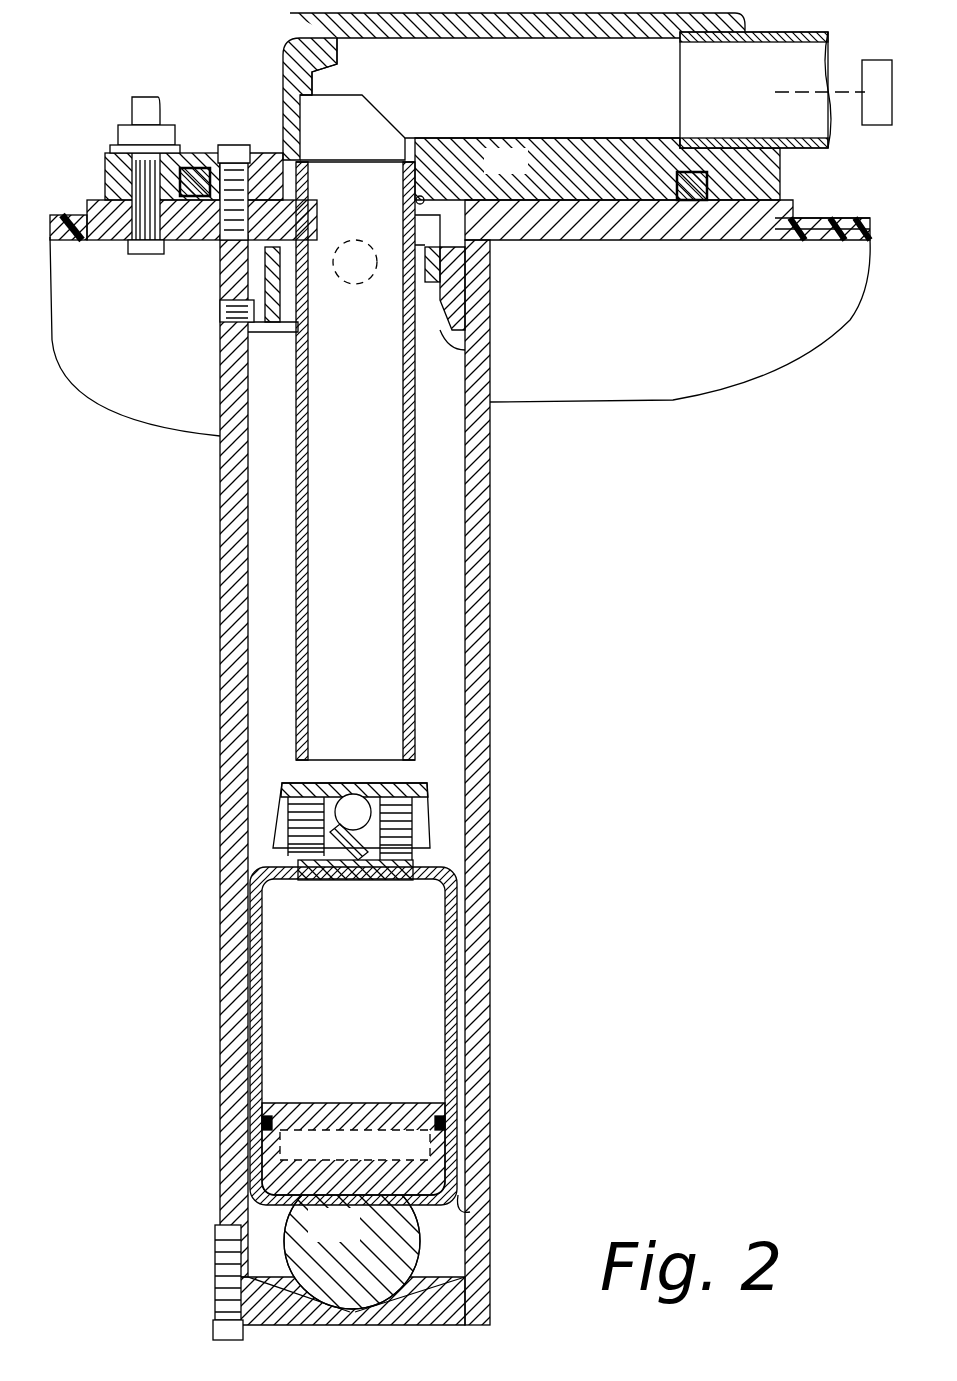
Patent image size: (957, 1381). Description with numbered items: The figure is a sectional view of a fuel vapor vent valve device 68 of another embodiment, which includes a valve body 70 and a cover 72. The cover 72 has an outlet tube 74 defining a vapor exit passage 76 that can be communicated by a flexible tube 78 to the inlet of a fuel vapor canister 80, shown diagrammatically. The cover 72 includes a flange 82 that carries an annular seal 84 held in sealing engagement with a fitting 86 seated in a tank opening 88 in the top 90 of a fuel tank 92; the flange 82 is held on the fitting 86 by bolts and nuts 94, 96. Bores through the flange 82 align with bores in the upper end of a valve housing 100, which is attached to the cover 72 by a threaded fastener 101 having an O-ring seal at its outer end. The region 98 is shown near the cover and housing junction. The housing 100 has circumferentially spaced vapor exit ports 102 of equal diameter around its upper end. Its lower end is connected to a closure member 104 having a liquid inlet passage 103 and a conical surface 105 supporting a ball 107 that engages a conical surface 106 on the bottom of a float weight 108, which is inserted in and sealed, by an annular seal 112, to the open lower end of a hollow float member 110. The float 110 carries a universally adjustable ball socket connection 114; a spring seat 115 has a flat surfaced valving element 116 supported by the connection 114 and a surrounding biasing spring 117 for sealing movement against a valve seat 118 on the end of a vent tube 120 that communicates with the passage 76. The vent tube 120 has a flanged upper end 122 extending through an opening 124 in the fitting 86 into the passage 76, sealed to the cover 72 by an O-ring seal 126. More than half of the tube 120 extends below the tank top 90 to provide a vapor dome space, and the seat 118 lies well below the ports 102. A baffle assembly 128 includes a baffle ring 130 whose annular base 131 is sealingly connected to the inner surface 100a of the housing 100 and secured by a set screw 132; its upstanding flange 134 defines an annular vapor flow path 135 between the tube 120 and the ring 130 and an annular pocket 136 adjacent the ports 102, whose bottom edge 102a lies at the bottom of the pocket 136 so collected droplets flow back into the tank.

The fuel vapor vent valve device 68 is at (572, 450).
The valve body 70 is at (96, 200).
The cover 72 is at (292, 22).
The outlet tube 74 is at (660, 36).
The vapor exit passage 76 is at (490, 99).
The flexible tube 78 is at (823, 152).
The fuel vapor canister 80 is at (880, 112).
The flange 82 is at (106, 180).
The annular seal 84 is at (236, 168).
The fitting 86 is at (115, 243).
The tank opening 88 is at (762, 242).
The top of fuel tank 90 is at (70, 215).
The fuel tank 92 is at (52, 358).
The bolts 94 is at (148, 97).
The nuts 96 is at (176, 130).
The recess 98 is at (300, 154).
The valve housing 100 is at (218, 528).
The inner surface of valve housing 100a is at (456, 388).
The threaded fastener 101 is at (252, 145).
The vapor exit ports 102 is at (232, 262).
The bottom edge of vapor exit port 102a is at (240, 290).
The liquid inlet passage 103 is at (440, 1322).
The closure member 104 is at (225, 1300).
The conical surface 105 is at (352, 1241).
The conical surface 106 is at (466, 1207).
The ball 107 is at (404, 1256).
The float weight 108 is at (256, 1190).
The float member 110 is at (468, 1018).
The annular seal 112 is at (450, 1122).
The ball socket connection 114 is at (353, 796).
The spring seat 115 is at (440, 838).
The valving element 116 is at (432, 803).
The biasing spring 117 is at (418, 860).
The valve seat 118 is at (300, 778).
The vent tube 120 is at (412, 498).
The flanged upper end 122 is at (450, 136).
The opening 124 is at (470, 252).
The O-ring seal 126 is at (424, 198).
The baffle assembly 128 is at (258, 343).
The baffle ring 130 is at (452, 346).
The annular base 131 is at (468, 326).
The set screw 132 is at (235, 315).
The upstanding flange 134 is at (510, 162).
The annular vapor flow path 135 is at (268, 334).
The annular pocket 136 is at (458, 280).